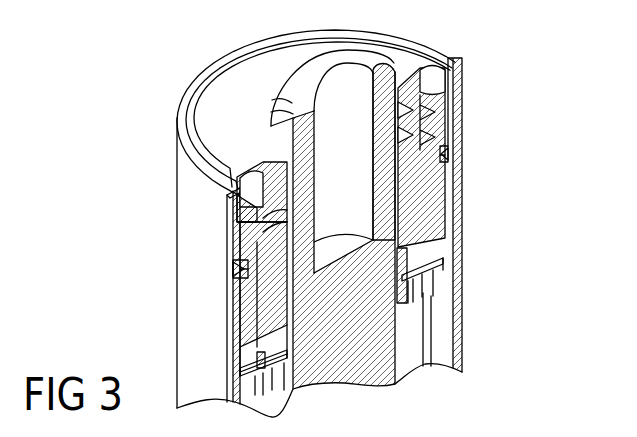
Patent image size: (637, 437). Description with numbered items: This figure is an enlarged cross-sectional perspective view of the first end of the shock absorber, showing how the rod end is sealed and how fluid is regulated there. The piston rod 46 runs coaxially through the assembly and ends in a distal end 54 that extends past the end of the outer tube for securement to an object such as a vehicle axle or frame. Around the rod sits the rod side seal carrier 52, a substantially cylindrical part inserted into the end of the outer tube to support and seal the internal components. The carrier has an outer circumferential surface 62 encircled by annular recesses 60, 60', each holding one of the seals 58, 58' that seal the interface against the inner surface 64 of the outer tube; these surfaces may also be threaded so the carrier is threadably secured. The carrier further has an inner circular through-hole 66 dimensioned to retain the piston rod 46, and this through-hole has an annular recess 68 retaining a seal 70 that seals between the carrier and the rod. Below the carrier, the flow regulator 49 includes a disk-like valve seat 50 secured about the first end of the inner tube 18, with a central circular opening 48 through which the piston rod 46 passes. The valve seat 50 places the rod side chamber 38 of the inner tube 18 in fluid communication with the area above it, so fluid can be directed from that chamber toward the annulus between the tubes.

The inner tube 18 is at (423, 304).
The rod side chamber 38 is at (410, 343).
The piston rod 46 is at (300, 143).
The central circular opening 48 is at (280, 343).
The flow regulator 49 is at (141, 339).
The valve seat 50 is at (412, 288).
The rod side seal carrier 52 is at (268, 292).
The distal end 54 is at (383, 68).
The seal 58 is at (474, 134).
The seal 58' is at (188, 255).
The annular recess 60 is at (476, 145).
The annular recess 60' is at (188, 268).
The outer circumferential surface 62 is at (453, 190).
The inner surface 64 is at (437, 244).
The inner circular through-hole 66 is at (263, 233).
The annular recess 68 is at (262, 165).
The seal 70 is at (257, 224).